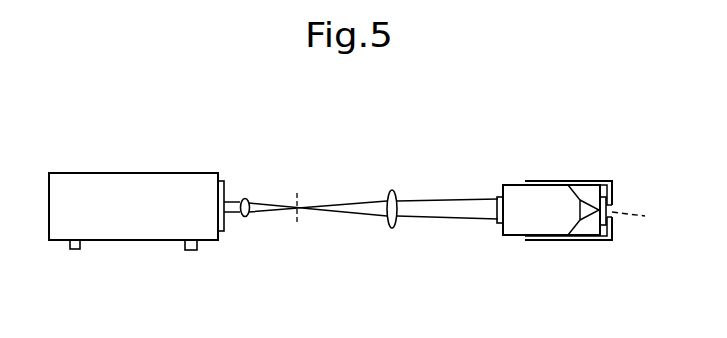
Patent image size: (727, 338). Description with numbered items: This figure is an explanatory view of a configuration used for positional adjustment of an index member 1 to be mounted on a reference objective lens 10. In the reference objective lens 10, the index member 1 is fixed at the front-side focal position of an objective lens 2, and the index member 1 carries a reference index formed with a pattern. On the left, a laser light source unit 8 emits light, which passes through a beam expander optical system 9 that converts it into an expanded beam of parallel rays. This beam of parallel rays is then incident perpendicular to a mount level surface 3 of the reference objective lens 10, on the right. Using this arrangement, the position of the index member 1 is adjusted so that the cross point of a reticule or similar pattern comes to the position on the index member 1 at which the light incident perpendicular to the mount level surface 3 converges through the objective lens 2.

The index member 1 is at (636, 205).
The objective lens 2 is at (545, 222).
The mount level surface 3 is at (497, 196).
The laser light source unit 8 is at (132, 245).
The beam expander optical system 9 is at (407, 243).
The reference objective lens 10 is at (555, 251).